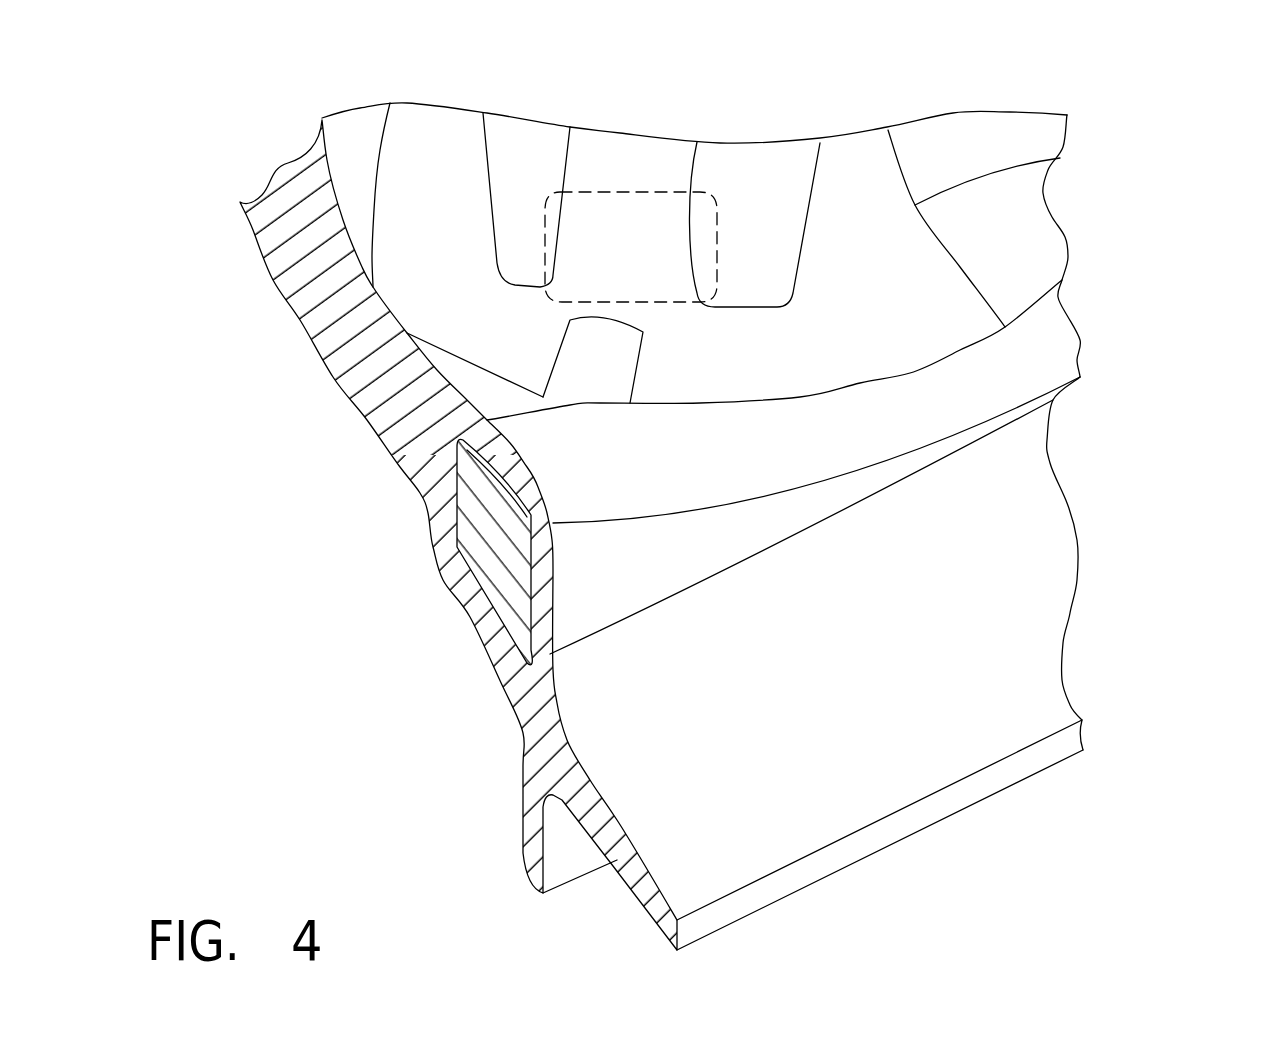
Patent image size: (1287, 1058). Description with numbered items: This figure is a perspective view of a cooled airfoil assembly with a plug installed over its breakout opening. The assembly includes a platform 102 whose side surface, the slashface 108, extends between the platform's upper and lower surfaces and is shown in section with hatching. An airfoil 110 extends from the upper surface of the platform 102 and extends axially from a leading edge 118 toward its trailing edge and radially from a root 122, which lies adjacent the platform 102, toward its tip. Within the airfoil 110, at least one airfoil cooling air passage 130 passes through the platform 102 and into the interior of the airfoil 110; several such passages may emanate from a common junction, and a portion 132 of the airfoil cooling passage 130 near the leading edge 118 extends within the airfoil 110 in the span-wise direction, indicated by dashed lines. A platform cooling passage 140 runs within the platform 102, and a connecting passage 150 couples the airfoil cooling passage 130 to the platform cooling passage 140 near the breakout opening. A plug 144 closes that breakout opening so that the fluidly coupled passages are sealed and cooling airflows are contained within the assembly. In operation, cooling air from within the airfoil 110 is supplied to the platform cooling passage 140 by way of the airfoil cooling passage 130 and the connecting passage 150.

The platform 102 is at (1086, 642).
The slashface 108 is at (343, 327).
The airfoil 110 is at (1080, 198).
The leading edge 118 is at (1053, 162).
The root 122 is at (1028, 262).
The airfoil cooling air passage 130 is at (428, 130).
The portion of the airfoil cooling passage 132 is at (663, 303).
The platform cooling passage 140 is at (1047, 357).
The plug 144 is at (497, 557).
The connecting passage 150 is at (620, 370).